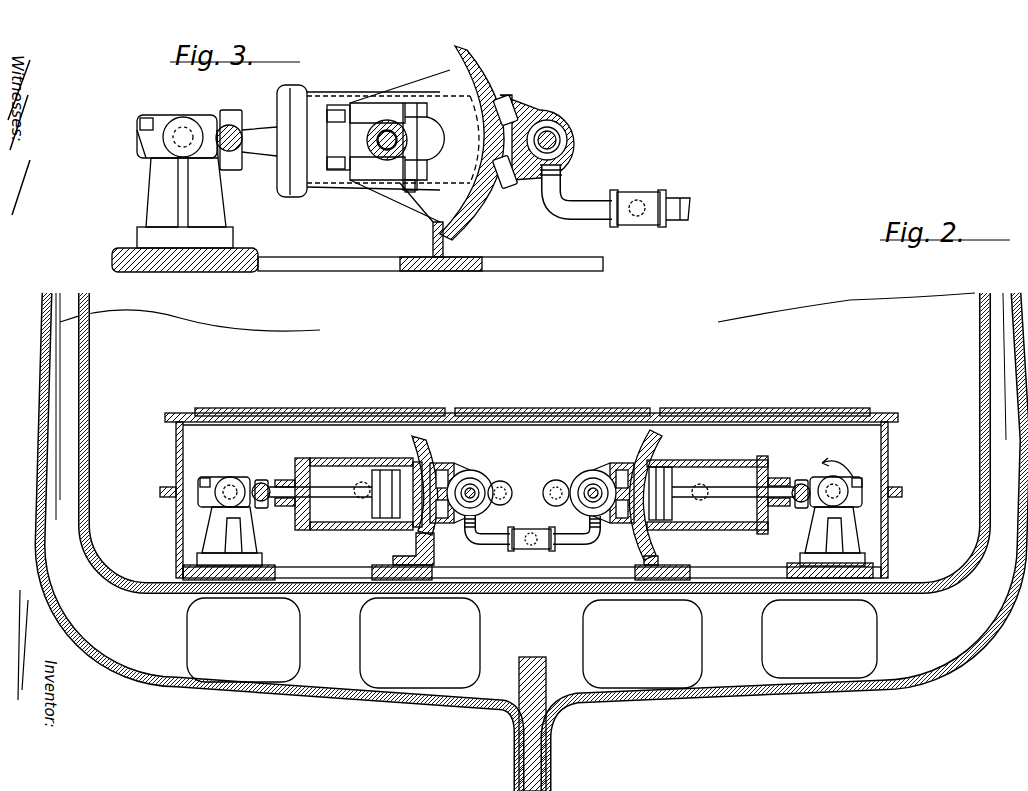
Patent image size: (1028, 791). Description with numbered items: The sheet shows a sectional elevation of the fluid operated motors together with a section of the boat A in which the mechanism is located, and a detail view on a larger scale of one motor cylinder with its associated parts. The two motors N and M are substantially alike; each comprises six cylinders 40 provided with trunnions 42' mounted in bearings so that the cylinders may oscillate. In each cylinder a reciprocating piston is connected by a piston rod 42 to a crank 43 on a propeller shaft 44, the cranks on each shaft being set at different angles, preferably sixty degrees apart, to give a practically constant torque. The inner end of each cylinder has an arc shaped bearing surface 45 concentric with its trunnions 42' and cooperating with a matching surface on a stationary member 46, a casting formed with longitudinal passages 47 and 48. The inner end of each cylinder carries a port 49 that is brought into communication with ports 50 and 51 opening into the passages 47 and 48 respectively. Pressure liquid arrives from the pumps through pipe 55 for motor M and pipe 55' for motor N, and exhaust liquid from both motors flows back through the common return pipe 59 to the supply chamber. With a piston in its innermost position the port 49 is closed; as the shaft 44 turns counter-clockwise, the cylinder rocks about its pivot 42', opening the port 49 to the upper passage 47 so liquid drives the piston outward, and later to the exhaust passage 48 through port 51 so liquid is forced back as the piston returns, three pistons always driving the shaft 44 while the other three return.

In FIG. 2, the hull of vessel A is at (163, 470).
In FIG. 2, the motor N is at (332, 442).
In FIG. 2, the motor M is at (738, 452).
In FIG. 2, the cylinder 40 is at (332, 530).
In FIG. 2, the piston rod 42 is at (756, 451).
In FIG. 3, the trunnions 42' is at (393, 135).
In FIG. 3, the crank 43 is at (195, 130).
In FIG. 2, the crank 43 is at (243, 480).
In FIG. 2, the propeller shaft 44 is at (850, 505).
In FIG. 2, the arc shaped bearing surface 45 is at (436, 457).
In FIG. 3, the stationary member 46 is at (475, 80).
In FIG. 2, the stationary member 46 is at (652, 446).
In FIG. 3, the passage 47 is at (530, 105).
In FIG. 3, the passage 48 is at (522, 183).
In FIG. 2, the passage 48 is at (596, 522).
In FIG. 2, the port 49 is at (700, 528).
In FIG. 2, the port 50 is at (651, 486).
In FIG. 2, the port 51 is at (660, 521).
In FIG. 2, the pipe 55 is at (547, 479).
In FIG. 2, the pipe 55' is at (502, 478).
In FIG. 2, the common return pipe 59 is at (510, 545).